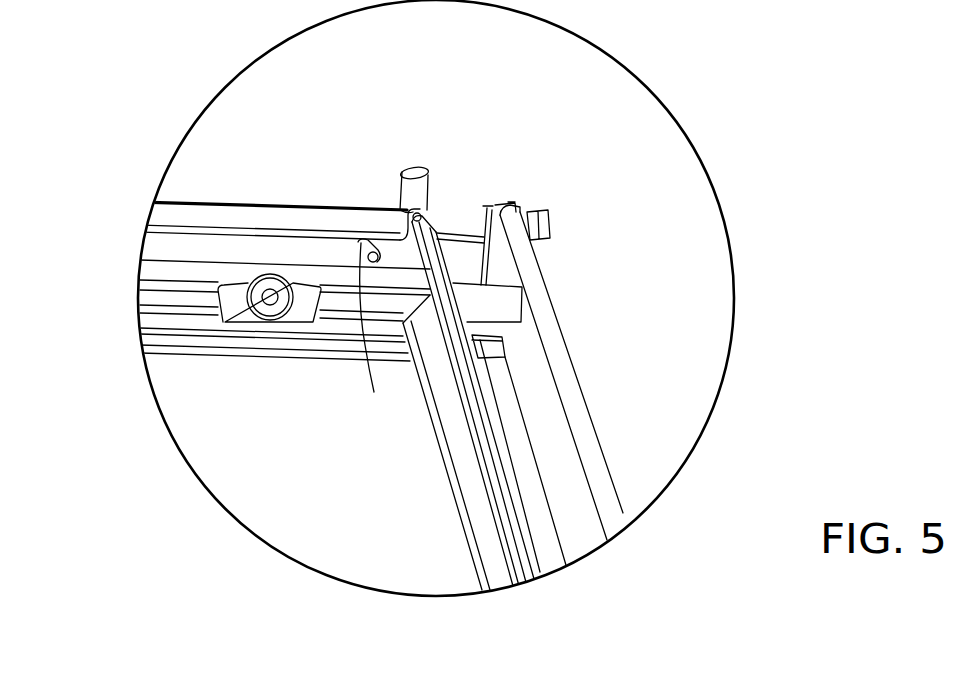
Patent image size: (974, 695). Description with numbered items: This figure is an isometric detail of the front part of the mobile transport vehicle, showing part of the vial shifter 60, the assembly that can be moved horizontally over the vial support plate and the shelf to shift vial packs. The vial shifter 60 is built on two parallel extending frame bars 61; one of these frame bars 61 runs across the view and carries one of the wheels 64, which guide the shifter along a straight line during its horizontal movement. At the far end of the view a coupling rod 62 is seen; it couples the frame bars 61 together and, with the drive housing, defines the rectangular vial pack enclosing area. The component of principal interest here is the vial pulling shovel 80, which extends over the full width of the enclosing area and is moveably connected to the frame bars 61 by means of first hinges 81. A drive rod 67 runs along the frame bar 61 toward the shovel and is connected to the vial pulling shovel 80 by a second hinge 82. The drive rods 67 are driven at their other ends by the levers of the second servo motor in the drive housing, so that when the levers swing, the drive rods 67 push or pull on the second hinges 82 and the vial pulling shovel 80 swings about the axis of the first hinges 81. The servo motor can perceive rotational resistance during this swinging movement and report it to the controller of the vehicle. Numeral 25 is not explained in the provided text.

The base 25 is at (255, 488).
The vial shifter 60 is at (370, 151).
The frame bars 61 is at (157, 270).
The coupling rod 62 is at (565, 356).
The wheels 64 is at (274, 305).
The drive rods 67 is at (272, 222).
The vial pulling shovel 80 is at (443, 338).
The first hinges 81 is at (374, 332).
The second hinges 82 is at (430, 207).